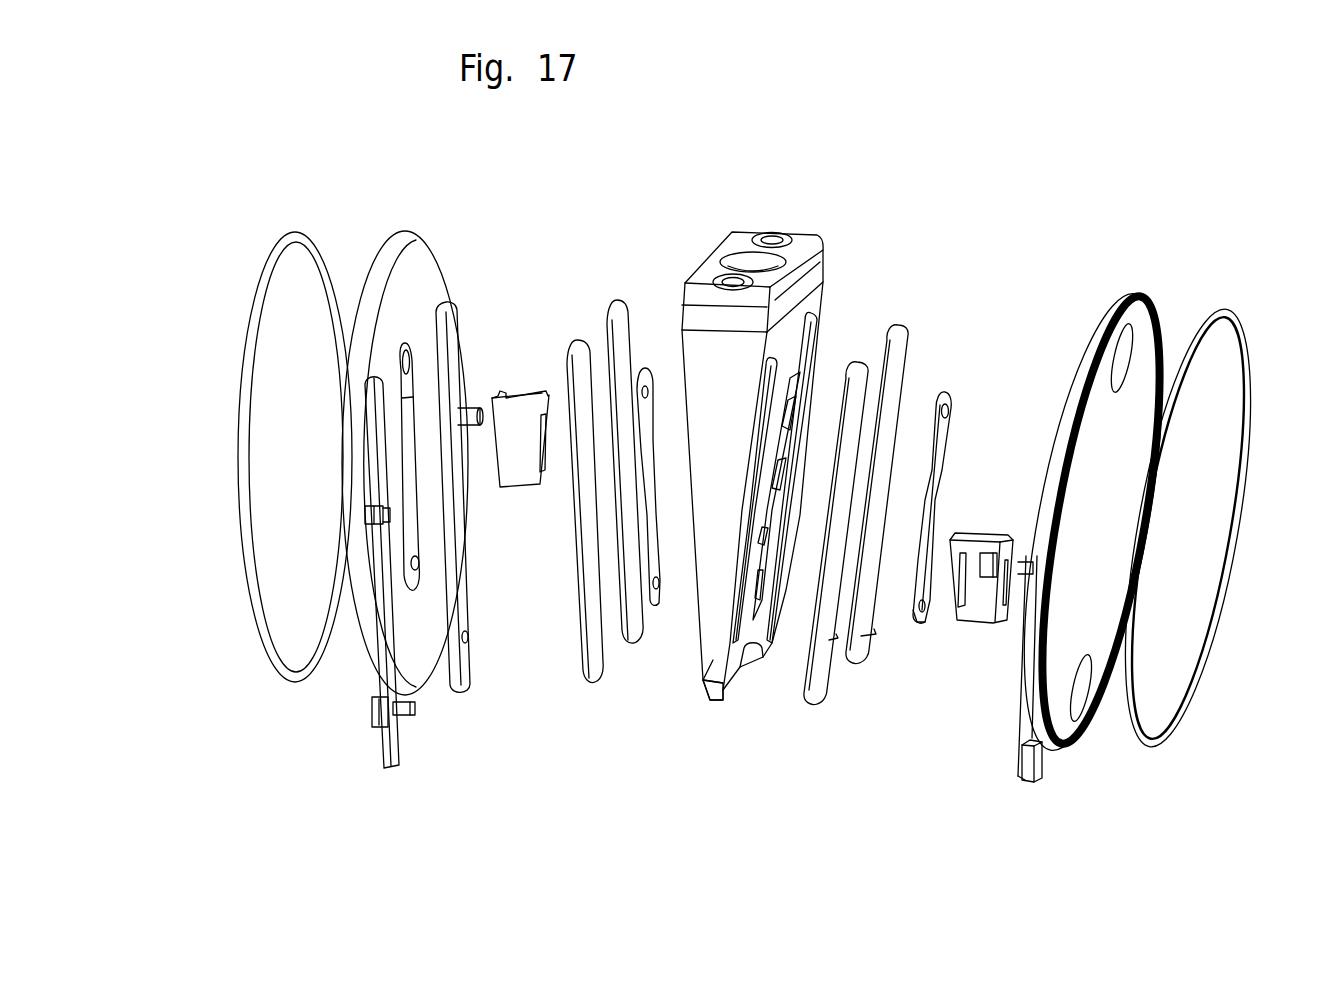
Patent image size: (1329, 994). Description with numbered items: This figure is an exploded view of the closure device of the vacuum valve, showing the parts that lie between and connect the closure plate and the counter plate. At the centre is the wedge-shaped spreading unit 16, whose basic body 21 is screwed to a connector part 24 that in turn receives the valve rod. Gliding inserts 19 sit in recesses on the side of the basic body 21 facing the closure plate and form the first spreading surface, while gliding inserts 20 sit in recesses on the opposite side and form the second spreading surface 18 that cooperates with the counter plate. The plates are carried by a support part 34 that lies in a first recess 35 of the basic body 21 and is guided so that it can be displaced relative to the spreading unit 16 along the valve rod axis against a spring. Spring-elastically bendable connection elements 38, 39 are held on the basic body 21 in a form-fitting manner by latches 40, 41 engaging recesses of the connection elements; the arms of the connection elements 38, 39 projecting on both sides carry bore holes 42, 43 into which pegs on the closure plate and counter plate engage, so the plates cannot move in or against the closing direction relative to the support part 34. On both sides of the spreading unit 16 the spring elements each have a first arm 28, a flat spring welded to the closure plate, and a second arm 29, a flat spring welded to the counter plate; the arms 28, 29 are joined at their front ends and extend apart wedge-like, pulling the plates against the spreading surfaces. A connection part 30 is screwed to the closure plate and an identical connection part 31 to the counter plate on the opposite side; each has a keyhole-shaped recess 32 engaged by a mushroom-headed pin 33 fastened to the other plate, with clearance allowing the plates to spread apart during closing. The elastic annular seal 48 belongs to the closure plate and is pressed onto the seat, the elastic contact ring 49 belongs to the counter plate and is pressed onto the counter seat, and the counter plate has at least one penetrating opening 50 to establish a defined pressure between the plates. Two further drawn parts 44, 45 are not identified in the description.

The spreading unit 16 is at (823, 248).
The second spreading surface 18 is at (836, 645).
The gliding inserts 19 is at (621, 360).
The gliding inserts 20 is at (893, 392).
The basic body 21 is at (715, 662).
The connector part 24 is at (797, 272).
The first arm 28 is at (393, 637).
The second arm 29 is at (1022, 740).
The connection part 30 is at (512, 410).
The connection part 31 is at (975, 535).
The keyhole-shaped recess 32 is at (541, 470).
The pin 33 is at (365, 512).
The support part 34 is at (783, 415).
The first recess 35 is at (760, 668).
The connection element 38 is at (651, 607).
The connection element 39 is at (938, 457).
The latch 40 is at (785, 500).
The latch 41 is at (792, 440).
The bore hole 42 is at (945, 410).
The bore hole 43 is at (915, 615).
The plate 44 is at (410, 355).
The hole 45 is at (418, 565).
The elastic annular seal 48 is at (263, 266).
The elastic contact ring 49 is at (1235, 318).
The penetrating opening 50 is at (1128, 298).